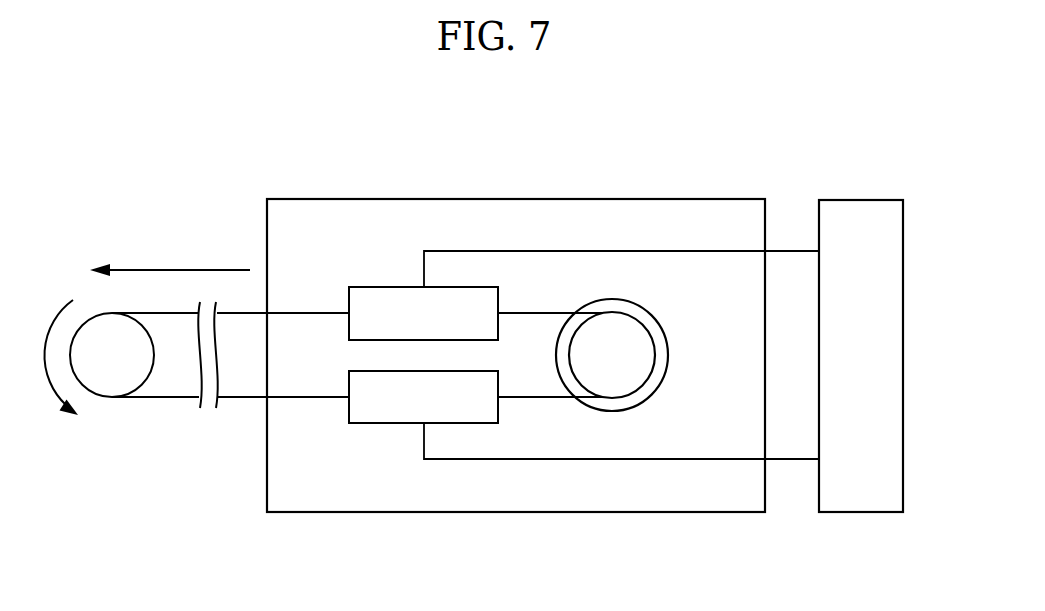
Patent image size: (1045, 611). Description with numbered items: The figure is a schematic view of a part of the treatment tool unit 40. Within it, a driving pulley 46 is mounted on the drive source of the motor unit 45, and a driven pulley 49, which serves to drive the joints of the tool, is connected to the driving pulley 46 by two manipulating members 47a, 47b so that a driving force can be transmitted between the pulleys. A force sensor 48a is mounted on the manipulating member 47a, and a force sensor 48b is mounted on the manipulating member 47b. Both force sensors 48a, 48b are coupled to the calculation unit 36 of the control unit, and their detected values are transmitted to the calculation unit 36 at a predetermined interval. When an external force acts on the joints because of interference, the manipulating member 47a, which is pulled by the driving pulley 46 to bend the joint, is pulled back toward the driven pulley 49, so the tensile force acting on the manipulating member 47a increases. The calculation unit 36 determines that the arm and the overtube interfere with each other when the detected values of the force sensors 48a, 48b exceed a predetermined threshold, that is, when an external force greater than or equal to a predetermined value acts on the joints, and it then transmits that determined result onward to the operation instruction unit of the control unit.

The calculation unit 36 is at (862, 200).
The treatment tool unit 40 is at (569, 170).
The motor unit 45 is at (700, 199).
The driving pulley 46 is at (647, 352).
The manipulating member 47a is at (315, 313).
The manipulating member 47b is at (307, 397).
The force sensor 48a is at (385, 287).
The force sensor 48b is at (388, 423).
The driven pulley 49 is at (107, 388).